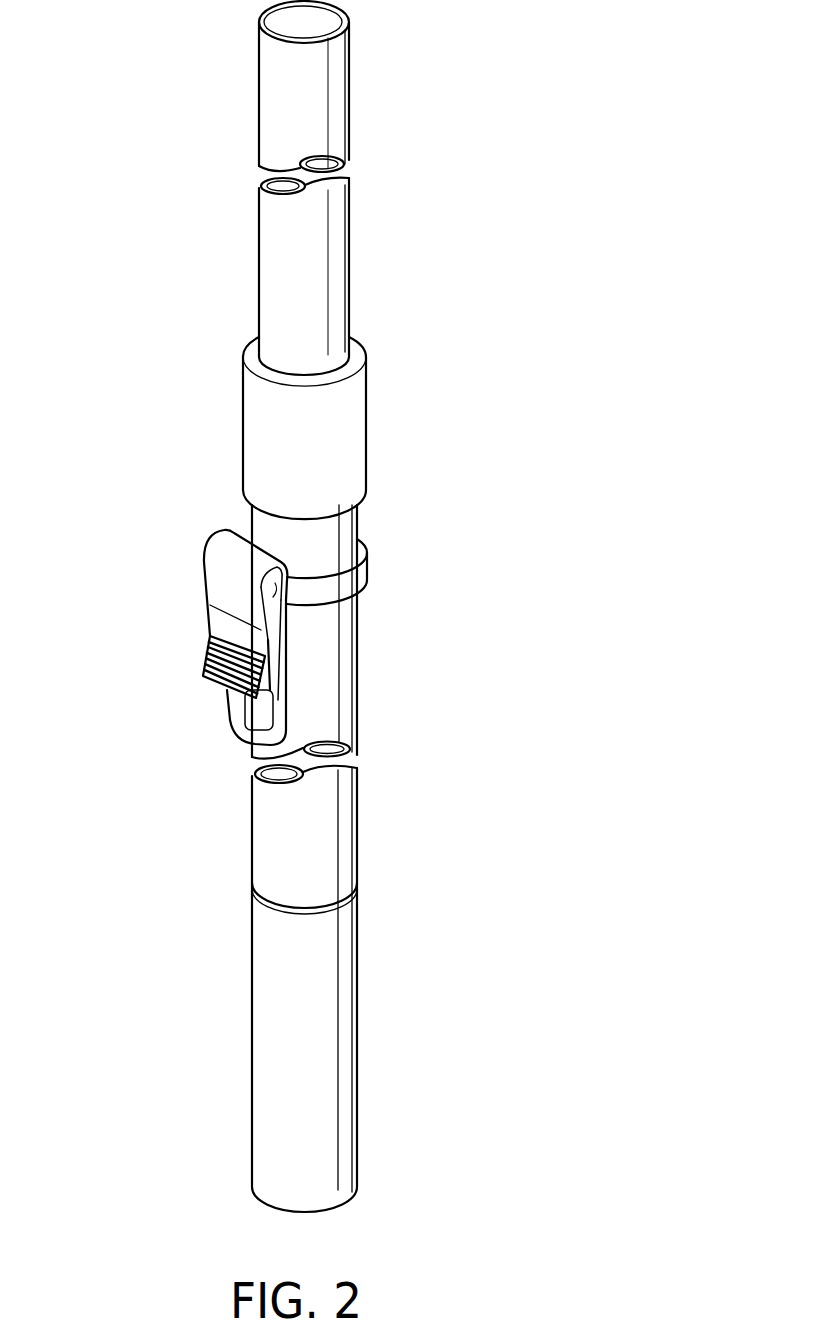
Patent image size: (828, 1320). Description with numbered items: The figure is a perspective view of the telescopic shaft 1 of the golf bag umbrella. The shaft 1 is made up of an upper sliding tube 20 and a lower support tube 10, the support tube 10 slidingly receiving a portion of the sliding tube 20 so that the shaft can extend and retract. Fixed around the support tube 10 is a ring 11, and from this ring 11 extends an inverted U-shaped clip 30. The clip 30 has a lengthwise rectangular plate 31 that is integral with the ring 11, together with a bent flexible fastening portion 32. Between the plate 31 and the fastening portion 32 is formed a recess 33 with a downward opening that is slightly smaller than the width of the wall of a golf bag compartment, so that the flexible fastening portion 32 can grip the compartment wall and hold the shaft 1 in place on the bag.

The telescopic shaft 1 is at (434, 538).
The lower support tube 10 is at (318, 723).
The ring 11 is at (368, 582).
The upper sliding tube 20 is at (335, 262).
The inverted U-shaped clip 30 is at (292, 648).
The lengthwise rectangular plate 31 is at (287, 650).
The bent flexible fastening portion 32 is at (220, 673).
The recess 33 is at (283, 610).